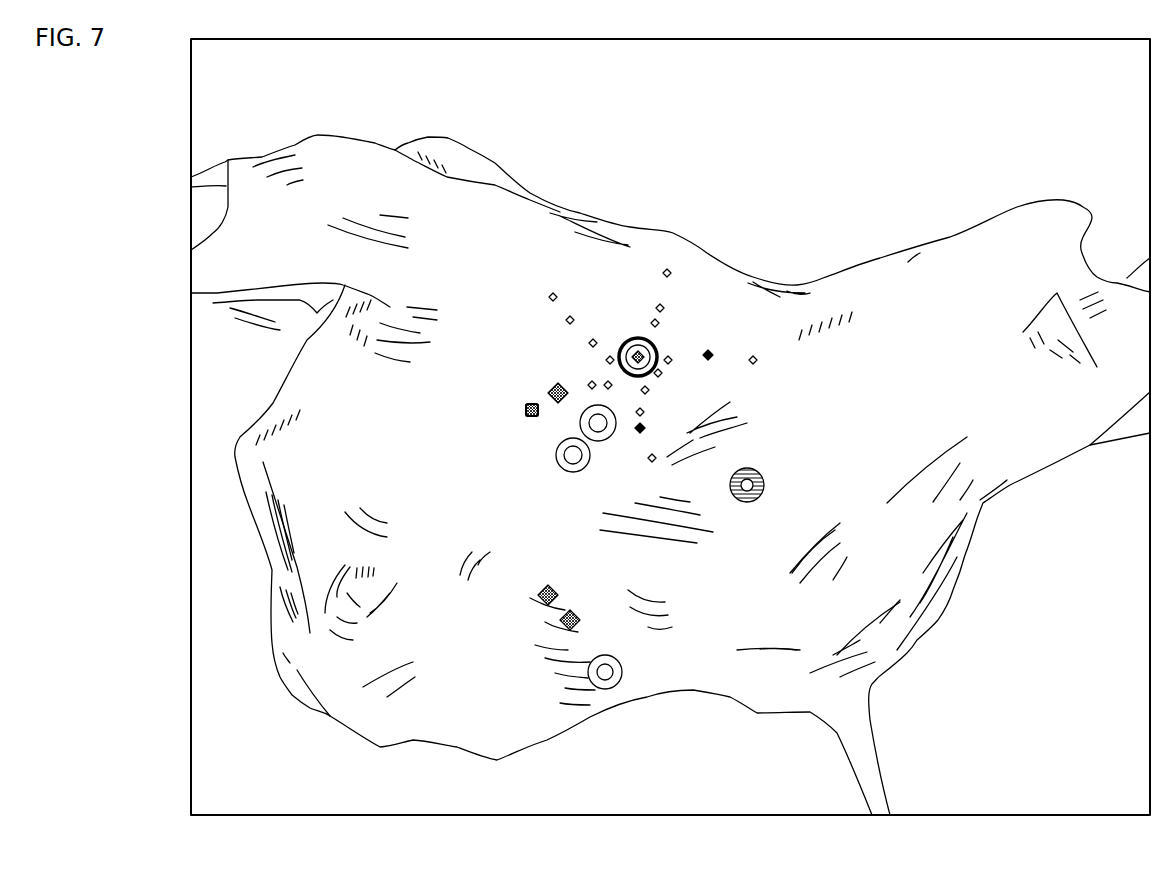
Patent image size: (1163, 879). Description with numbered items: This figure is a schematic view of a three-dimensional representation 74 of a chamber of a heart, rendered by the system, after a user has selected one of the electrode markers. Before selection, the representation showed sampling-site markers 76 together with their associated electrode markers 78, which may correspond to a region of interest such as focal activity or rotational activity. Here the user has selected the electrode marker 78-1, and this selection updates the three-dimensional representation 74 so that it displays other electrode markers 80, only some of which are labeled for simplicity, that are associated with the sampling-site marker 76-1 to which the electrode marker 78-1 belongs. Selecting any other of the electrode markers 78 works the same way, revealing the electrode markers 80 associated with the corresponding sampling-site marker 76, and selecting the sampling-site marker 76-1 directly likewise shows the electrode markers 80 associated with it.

The three-dimensional representation 74 is at (825, 163).
The sampling-site markers 76 is at (582, 421).
The sampling-site marker 76-1 is at (656, 343).
The electrode markers 78 is at (553, 384).
The electrode marker 78-1 is at (528, 406).
The electrode markers 80 is at (662, 274).